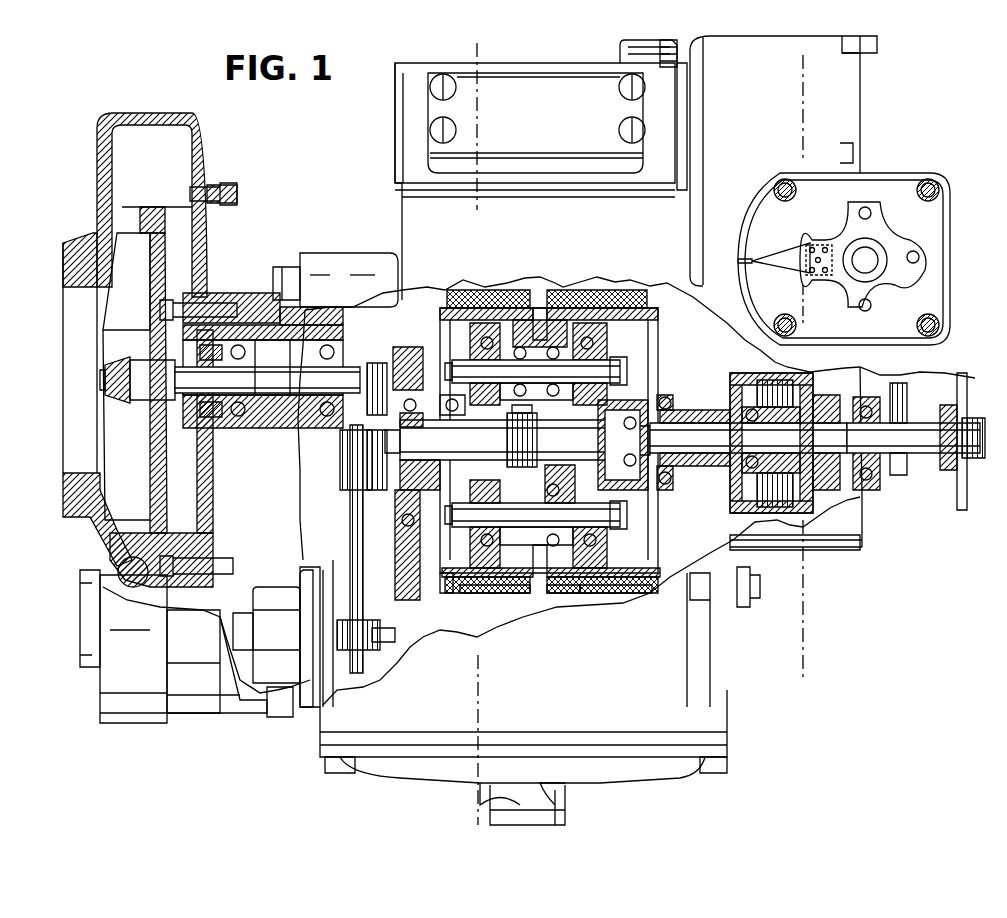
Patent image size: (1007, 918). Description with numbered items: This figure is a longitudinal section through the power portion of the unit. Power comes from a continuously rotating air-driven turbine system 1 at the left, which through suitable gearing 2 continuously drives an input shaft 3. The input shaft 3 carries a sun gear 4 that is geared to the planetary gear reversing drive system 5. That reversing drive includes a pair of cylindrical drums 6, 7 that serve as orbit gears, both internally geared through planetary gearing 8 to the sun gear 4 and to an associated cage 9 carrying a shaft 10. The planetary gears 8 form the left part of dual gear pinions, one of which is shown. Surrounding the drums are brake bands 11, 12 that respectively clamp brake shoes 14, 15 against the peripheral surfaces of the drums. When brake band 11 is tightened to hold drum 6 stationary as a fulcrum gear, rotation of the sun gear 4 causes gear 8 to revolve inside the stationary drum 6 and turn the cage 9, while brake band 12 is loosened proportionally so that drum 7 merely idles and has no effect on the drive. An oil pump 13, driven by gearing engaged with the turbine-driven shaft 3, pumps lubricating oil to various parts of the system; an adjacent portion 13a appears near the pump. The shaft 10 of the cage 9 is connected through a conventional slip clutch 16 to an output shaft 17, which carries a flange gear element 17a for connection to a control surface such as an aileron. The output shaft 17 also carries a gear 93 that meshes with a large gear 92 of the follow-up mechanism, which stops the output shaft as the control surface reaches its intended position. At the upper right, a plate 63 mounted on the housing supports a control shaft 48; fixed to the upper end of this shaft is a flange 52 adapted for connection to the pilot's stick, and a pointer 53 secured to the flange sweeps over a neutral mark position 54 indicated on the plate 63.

The air-driven turbine system 1 is at (117, 324).
The gearing 2 is at (363, 395).
The input shaft 3 is at (442, 450).
The sun gear 4 is at (510, 468).
The planetary gear reversing drive system 5 is at (540, 292).
The cylindrical drum 6 is at (785, 64).
The cylindrical drum 7 is at (660, 330).
The planetary gearing 8 is at (513, 413).
The cage 9 is at (613, 403).
The shaft 10 is at (705, 428).
The brake band 11 is at (483, 595).
The brake band 12 is at (584, 593).
The oil pump 13 is at (277, 574).
The motor bracket 13a is at (763, 541).
The brake shoe 14 is at (445, 590).
The brake shoe 15 is at (563, 592).
The slip clutch 16 is at (820, 523).
The output shaft 17 is at (910, 449).
The flange gear element 17a is at (955, 490).
The control shaft 48 is at (880, 272).
The flange 52 is at (902, 232).
The pointer 53 is at (794, 270).
The neutral mark position 54 is at (753, 260).
The plate 63 is at (887, 173).
The large gear 92 is at (910, 395).
The gear 93 is at (897, 475).